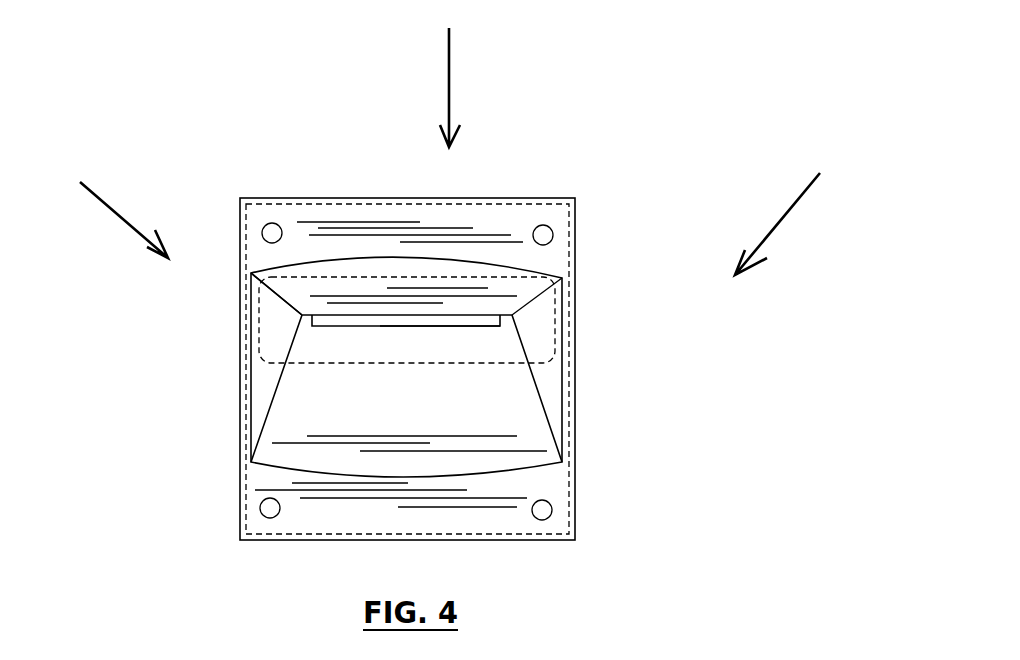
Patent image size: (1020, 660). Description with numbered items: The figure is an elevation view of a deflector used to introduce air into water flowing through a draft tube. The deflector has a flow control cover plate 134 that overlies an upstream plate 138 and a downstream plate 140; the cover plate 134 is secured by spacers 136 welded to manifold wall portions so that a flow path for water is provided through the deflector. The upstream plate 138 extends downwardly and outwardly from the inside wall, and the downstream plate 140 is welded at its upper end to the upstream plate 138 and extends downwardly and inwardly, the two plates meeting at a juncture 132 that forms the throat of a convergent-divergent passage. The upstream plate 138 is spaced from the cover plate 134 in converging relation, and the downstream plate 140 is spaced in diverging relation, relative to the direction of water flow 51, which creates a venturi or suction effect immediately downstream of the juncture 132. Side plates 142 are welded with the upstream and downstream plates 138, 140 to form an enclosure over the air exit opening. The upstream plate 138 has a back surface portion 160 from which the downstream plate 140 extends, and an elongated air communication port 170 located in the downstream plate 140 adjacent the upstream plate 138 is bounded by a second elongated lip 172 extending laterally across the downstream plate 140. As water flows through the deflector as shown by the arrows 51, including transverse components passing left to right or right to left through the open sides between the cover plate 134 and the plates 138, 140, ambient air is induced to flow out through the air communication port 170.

The direction of water flow 51 is at (444, 68).
The juncture 132 is at (302, 315).
The flow control cover plate 134 is at (468, 223).
The spacers 136 is at (553, 235).
The upstream plate 138 is at (527, 292).
The downstream plate 140 is at (530, 438).
The side plates 142 is at (262, 393).
The back surface portion 160 is at (282, 289).
The elongated air communication port 170 is at (343, 322).
The second elongated lip 172 is at (398, 321).